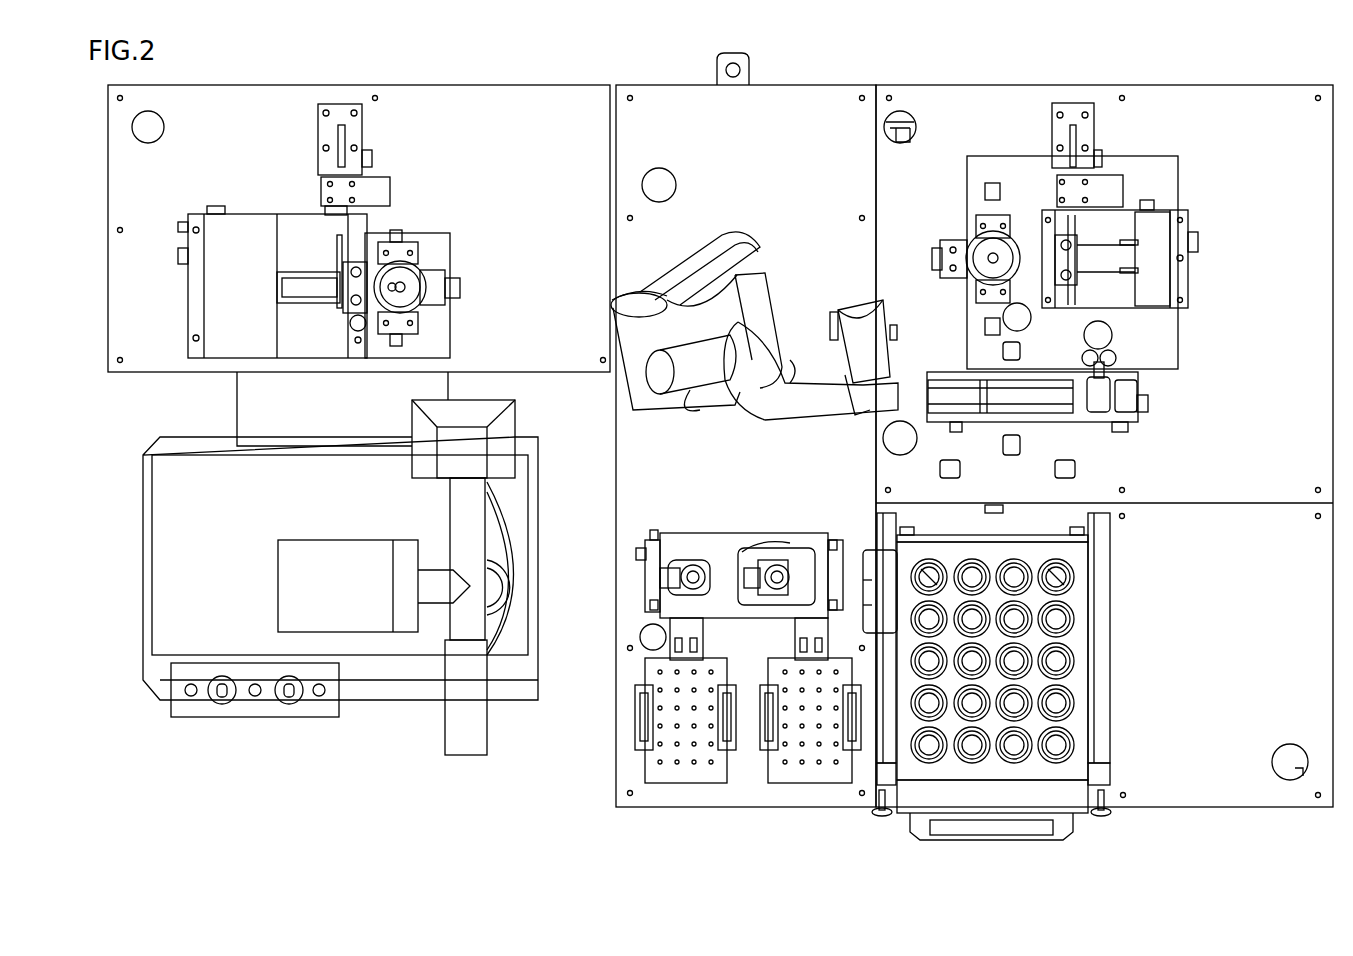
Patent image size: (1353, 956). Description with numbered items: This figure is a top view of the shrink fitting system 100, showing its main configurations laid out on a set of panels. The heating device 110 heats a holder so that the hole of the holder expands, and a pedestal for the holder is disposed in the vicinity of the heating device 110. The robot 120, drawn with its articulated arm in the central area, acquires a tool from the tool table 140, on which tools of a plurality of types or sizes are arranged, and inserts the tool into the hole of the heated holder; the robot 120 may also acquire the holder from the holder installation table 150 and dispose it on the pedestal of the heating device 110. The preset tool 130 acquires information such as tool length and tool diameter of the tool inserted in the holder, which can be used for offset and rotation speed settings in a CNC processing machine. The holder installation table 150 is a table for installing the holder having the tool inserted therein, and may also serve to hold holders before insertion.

The shrink fitting system 100 is at (1340, 63).
The heating device 110 is at (1160, 175).
The robot 120 is at (757, 297).
The preset tool 130 is at (170, 615).
The tool table 140 is at (812, 773).
The holder installation table 150 is at (1062, 760).